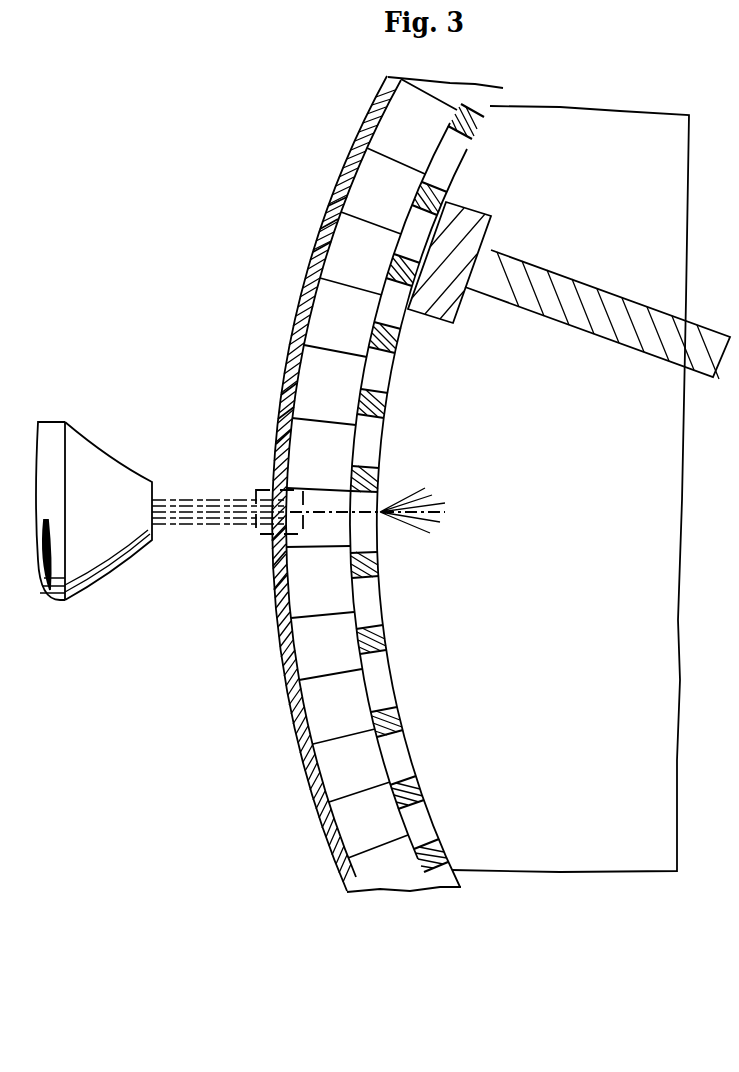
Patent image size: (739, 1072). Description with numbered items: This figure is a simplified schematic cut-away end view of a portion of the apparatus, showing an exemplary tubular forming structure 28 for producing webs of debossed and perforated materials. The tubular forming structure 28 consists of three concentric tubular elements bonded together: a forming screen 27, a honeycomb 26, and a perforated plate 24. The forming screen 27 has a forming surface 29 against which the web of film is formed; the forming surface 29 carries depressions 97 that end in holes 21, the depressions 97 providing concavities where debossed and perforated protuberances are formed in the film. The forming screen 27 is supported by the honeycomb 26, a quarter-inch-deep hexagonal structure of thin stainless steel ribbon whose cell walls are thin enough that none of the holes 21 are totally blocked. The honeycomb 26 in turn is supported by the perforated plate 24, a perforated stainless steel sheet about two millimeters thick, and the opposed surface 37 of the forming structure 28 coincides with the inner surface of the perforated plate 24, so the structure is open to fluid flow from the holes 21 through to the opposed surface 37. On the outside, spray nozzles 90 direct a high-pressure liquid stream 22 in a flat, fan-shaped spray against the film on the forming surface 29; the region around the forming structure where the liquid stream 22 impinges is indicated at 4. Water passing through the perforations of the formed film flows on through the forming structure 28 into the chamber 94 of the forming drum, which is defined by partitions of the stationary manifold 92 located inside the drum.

The detail region 4 is at (257, 490).
The holes 21 is at (280, 427).
The liquid stream 22 is at (202, 510).
The perforated plate 24 is at (378, 662).
The honeycomb 26 is at (387, 156).
The forming screen 27 is at (330, 223).
The tubular forming structure 28 is at (414, 900).
The forming surface 29 is at (292, 332).
The opposed surface 37 is at (380, 430).
The spray nozzles 90 is at (90, 570).
The stationary manifold 92 is at (535, 307).
The chamber 94 is at (573, 447).
The depressions 97 is at (280, 551).